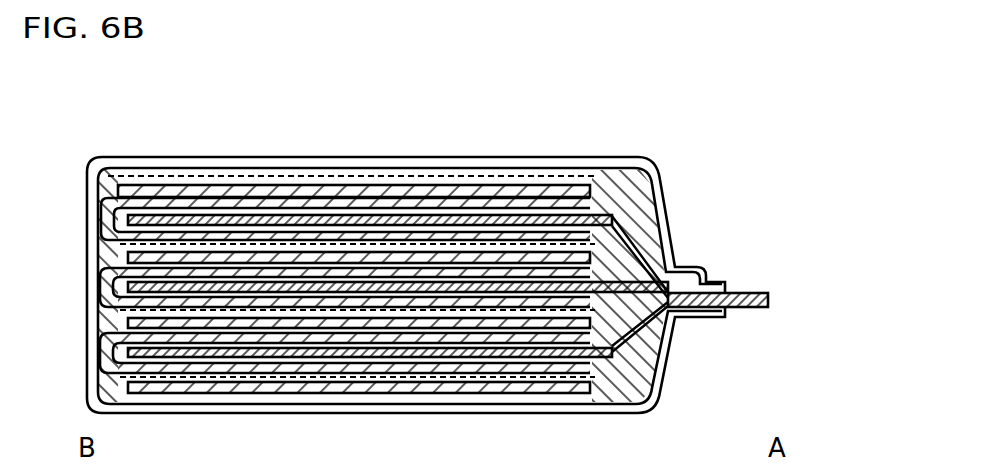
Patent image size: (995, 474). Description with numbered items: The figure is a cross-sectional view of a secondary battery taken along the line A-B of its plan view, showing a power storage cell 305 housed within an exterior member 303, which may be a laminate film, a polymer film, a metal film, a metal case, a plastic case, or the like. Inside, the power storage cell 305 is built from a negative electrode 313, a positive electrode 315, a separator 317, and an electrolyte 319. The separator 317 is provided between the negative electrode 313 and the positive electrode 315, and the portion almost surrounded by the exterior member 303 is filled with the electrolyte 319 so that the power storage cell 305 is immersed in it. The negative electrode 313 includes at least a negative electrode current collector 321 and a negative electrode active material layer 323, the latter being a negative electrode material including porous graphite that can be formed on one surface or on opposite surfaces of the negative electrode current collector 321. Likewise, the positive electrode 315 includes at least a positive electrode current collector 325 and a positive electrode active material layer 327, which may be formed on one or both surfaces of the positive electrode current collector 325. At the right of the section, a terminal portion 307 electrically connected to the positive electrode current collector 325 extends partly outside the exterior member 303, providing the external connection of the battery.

The exterior member 303 is at (662, 213).
The power storage cell 305 is at (157, 187).
The terminal portion 307 is at (768, 294).
The negative electrode 313 is at (293, 83).
The positive electrode 315 is at (563, 83).
The separator 317 is at (352, 244).
The electrolyte 319 is at (630, 197).
The negative electrode current collector 321 is at (240, 216).
The negative electrode active material layer 323 is at (295, 236).
The positive electrode current collector 325 is at (478, 222).
The positive electrode active material layer 327 is at (420, 199).